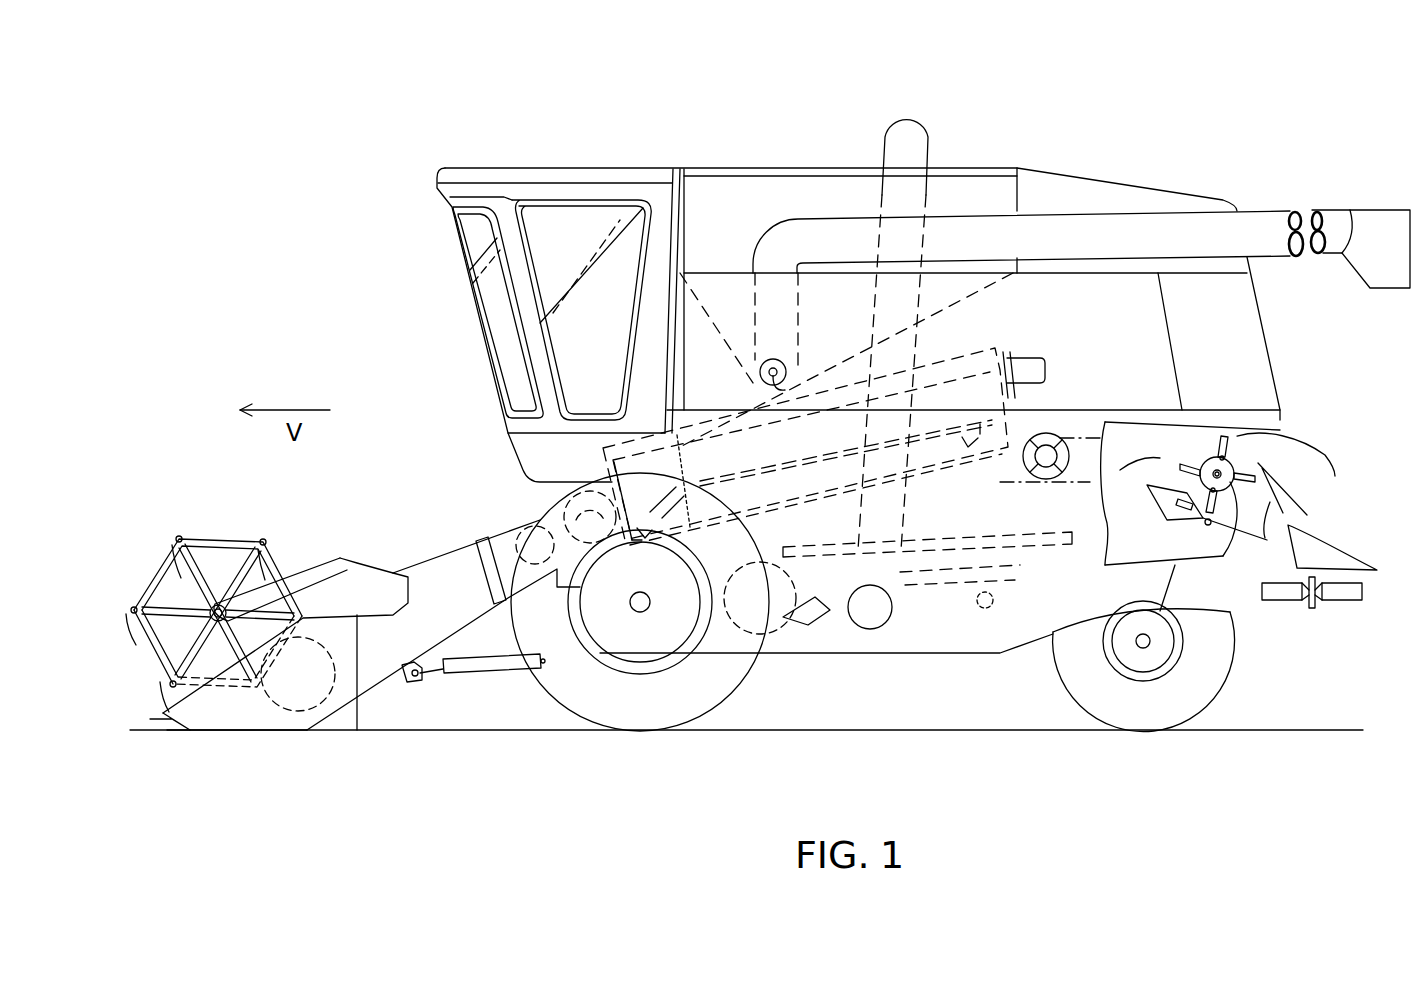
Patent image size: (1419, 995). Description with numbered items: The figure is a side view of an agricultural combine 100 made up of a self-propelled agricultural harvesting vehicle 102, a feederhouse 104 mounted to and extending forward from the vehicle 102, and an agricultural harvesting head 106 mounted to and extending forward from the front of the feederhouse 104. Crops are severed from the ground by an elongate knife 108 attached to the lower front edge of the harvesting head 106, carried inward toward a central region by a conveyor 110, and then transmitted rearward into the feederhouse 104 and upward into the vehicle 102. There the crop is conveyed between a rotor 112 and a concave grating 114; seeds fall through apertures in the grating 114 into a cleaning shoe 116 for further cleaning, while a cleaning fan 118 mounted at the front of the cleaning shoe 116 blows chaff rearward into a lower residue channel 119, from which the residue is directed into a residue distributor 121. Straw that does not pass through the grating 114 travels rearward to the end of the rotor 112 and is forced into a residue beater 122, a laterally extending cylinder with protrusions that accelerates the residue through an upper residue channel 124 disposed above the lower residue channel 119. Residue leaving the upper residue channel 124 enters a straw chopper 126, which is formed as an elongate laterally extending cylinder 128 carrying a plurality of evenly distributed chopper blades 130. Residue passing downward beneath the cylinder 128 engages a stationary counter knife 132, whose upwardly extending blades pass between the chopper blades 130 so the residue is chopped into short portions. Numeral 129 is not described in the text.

The agricultural combine 100 is at (787, 74).
The self-propelled agricultural harvesting vehicle 102 is at (735, 168).
The feederhouse 104 is at (437, 554).
The agricultural harvesting head 106 is at (353, 557).
The elongate knife 108 is at (154, 731).
The conveyor 110 is at (322, 734).
The rotor 112 is at (963, 347).
The concave grating 114 is at (1050, 395).
The cleaning shoe 116 is at (940, 528).
The cleaning fan 118 is at (793, 628).
The lower residue channel 119 is at (1137, 543).
The residue distributor 121 is at (1352, 610).
The residue beater 122 is at (1062, 434).
The upper residue channel 124 is at (1125, 465).
The straw chopper 126 is at (1247, 465).
The cylinder 128 is at (1258, 593).
The chopper rotor 129 is at (1243, 455).
The chopper blades 130 is at (1257, 487).
The stationary counter knife 132 is at (1165, 507).